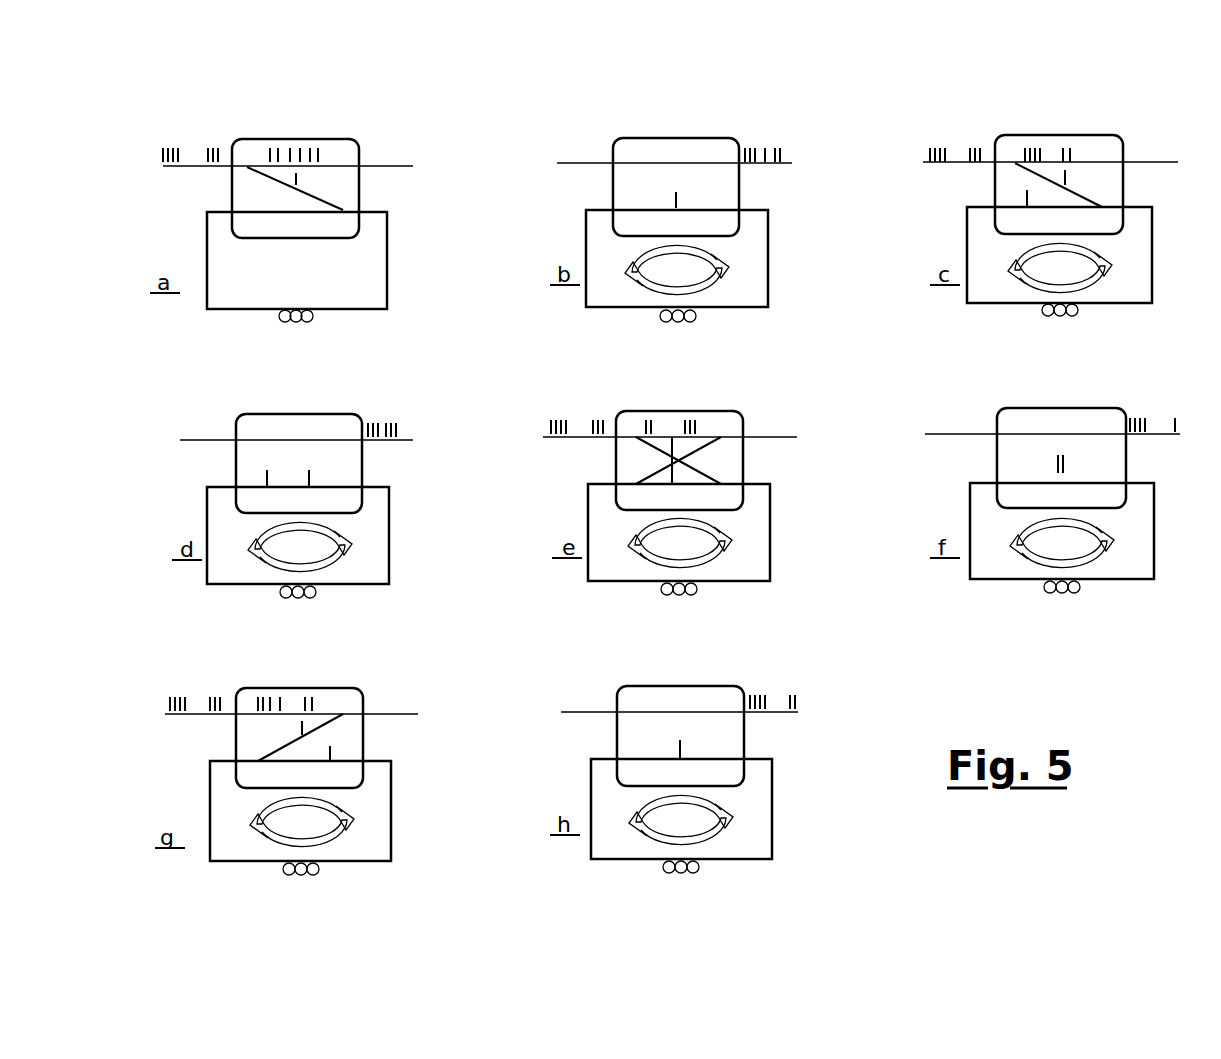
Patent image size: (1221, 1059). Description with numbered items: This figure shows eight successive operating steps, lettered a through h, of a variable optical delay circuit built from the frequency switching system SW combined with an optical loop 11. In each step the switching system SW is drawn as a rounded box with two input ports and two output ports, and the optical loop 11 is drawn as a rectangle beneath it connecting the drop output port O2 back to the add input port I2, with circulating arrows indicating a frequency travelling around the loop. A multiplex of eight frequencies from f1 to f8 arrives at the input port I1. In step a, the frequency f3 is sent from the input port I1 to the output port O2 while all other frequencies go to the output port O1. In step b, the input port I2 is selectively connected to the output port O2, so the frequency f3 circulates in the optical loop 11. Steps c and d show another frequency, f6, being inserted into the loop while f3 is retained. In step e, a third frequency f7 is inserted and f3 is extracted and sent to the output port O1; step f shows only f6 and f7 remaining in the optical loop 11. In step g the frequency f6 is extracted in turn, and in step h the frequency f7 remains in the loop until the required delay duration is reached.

The optical loop 11 is at (387, 258).
The switching system SW is at (288, 139).
The input port I1 is at (232, 167).
The input port I2 is at (232, 212).
The output port O1 is at (359, 163).
The output port O2 is at (359, 203).
The frequency f1 is at (164, 143).
The frequency f3 is at (656, 330).
The frequency f6 is at (681, 452).
The frequency f7 is at (698, 606).
The frequency f8 is at (220, 143).